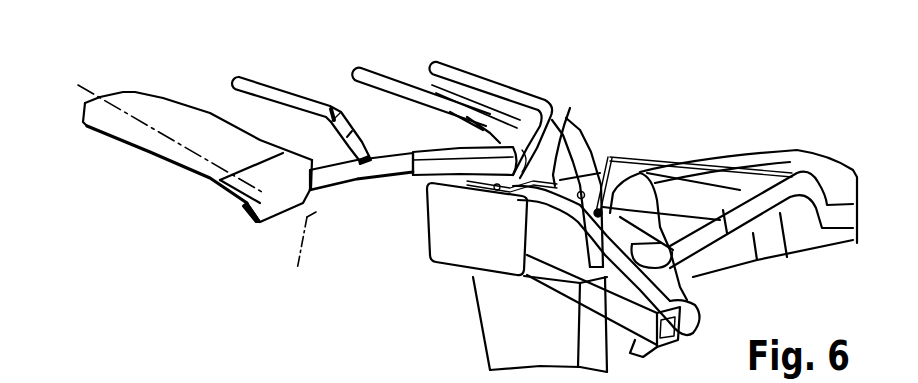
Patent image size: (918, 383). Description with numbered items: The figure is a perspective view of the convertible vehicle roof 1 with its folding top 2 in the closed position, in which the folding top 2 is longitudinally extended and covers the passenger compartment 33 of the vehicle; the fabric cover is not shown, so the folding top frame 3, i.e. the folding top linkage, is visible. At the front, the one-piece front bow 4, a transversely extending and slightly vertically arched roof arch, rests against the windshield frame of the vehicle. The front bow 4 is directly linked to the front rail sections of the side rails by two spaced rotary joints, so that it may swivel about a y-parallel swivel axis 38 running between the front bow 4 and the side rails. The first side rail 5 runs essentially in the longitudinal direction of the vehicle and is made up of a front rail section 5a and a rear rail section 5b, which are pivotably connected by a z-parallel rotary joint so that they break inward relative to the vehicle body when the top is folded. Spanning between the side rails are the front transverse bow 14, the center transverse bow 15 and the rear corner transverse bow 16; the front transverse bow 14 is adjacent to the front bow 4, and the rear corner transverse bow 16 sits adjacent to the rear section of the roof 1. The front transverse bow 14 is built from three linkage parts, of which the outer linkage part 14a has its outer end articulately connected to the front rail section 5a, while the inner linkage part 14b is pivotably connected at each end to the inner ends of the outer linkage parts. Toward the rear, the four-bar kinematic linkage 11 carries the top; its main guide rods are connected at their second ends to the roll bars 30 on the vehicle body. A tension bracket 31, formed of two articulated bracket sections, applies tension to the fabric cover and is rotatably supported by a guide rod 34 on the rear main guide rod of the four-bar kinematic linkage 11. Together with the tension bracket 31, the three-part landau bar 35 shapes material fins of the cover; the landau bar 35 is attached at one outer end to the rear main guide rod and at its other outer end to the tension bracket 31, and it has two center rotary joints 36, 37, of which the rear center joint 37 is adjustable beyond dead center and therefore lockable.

The convertible vehicle roof 1 is at (590, 126).
The folding top 2 is at (301, 82).
The folding top frame 3 is at (382, 80).
The front bow 4 is at (127, 130).
The first side rail 5 is at (370, 187).
The front rail section 5a is at (333, 193).
The rear rail section 5b is at (433, 173).
The four-bar kinematic linkage 11 is at (291, 380).
The front transverse bow 14 is at (252, 85).
The outer linkage part 14a is at (343, 120).
The inner linkage part 14b is at (326, 110).
The center transverse bow 15 is at (447, 110).
The rear corner transverse bow 16 is at (512, 88).
The roll bar 30 is at (557, 160).
The tension bracket 31 is at (787, 257).
The passenger compartment 33 is at (416, 319).
The guide rod 34 is at (687, 280).
The landau bar 35 is at (745, 172).
The center rotary joint 36 is at (610, 157).
The rear center joint 37 is at (684, 163).
The swivel axis 38 is at (296, 254).